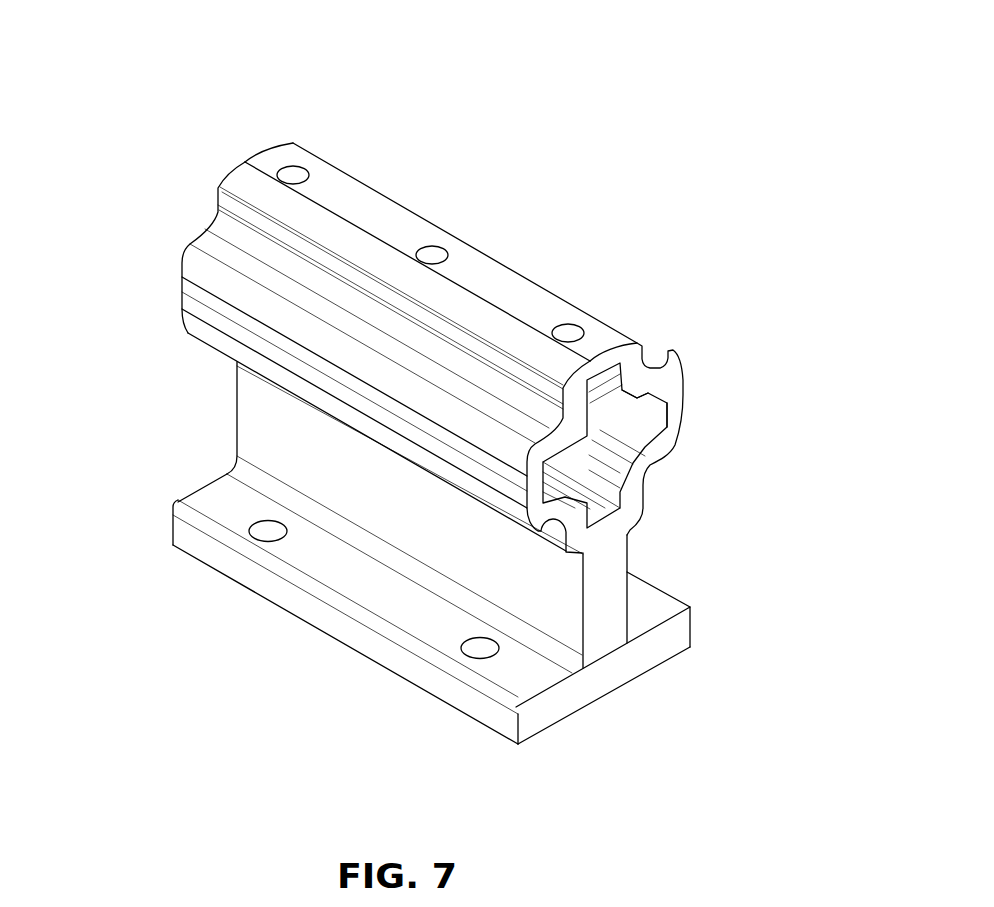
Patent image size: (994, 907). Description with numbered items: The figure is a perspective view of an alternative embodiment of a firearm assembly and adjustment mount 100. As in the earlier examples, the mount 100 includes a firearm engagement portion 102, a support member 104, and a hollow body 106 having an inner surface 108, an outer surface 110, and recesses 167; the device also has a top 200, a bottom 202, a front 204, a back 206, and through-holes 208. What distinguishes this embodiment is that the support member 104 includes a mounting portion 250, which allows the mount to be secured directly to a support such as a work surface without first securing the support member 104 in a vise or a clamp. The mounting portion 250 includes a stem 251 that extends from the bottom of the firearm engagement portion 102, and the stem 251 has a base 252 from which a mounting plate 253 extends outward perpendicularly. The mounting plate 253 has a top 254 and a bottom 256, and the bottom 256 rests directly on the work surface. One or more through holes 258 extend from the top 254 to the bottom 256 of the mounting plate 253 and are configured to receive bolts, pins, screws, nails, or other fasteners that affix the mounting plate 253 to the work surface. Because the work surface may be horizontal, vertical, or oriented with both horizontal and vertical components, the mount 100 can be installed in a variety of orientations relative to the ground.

The firearm assembly and adjustment mount 100 is at (127, 75).
The firearm engagement portion 102 is at (358, 215).
The support member 104 is at (253, 462).
The hollow body 106 is at (593, 440).
The inner surface 108 is at (642, 403).
The outer surface 110 is at (222, 285).
The recesses 167 is at (667, 410).
The top 200 is at (522, 210).
The bottom 202 is at (699, 688).
The front 204 is at (729, 510).
The back 206 is at (179, 202).
The through-holes 208 is at (292, 176).
The mounting portion 250 is at (390, 593).
The stem 251 is at (610, 596).
The base 252 is at (610, 667).
The mounting plate 253 is at (288, 600).
The top 254 is at (550, 687).
The bottom 256 is at (530, 735).
The through holes 258 is at (267, 532).